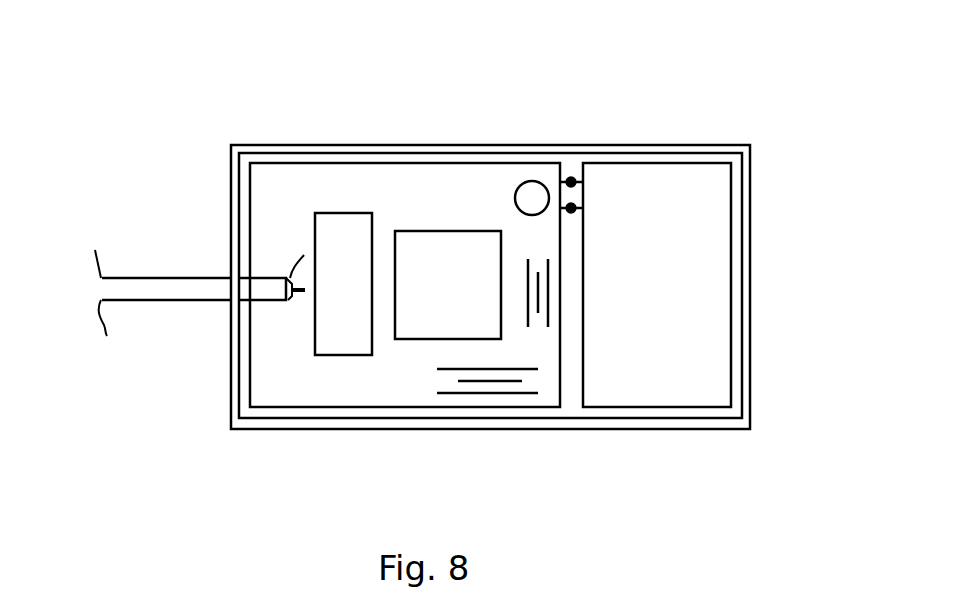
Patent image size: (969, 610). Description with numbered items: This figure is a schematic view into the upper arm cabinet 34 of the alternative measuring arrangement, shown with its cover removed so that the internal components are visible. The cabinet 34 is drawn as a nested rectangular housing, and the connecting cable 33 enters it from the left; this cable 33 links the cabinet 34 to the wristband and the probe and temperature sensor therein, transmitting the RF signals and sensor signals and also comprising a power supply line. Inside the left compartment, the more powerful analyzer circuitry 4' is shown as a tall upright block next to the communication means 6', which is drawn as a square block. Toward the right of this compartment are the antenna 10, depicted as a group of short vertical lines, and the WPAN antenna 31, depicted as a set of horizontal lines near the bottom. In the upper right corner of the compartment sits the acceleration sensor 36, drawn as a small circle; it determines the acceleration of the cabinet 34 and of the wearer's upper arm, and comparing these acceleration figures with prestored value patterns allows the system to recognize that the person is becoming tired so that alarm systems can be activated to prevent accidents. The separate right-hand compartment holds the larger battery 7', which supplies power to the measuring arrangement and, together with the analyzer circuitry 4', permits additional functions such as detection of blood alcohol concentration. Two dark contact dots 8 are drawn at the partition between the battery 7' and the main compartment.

The analyzer circuitry 4' is at (341, 200).
The communication means 6' is at (448, 186).
The battery 7' is at (716, 285).
The connector contacts 8 is at (571, 182).
The antenna 10 is at (548, 293).
The WPAN antenna 31 is at (486, 393).
The connecting cable 33 is at (130, 290).
The upper arm cabinet 34 is at (299, 430).
The acceleration sensor 36 is at (537, 195).